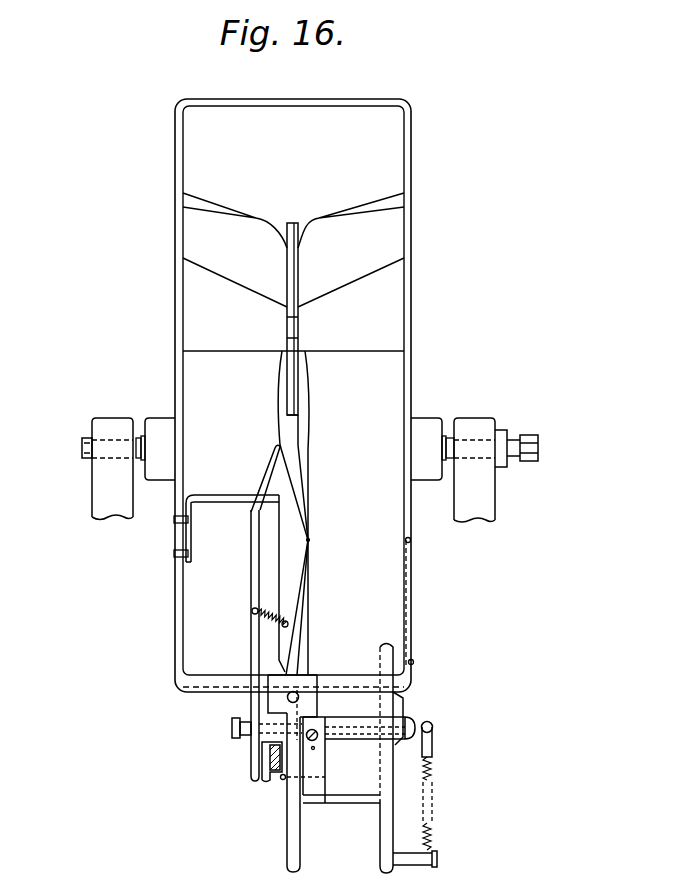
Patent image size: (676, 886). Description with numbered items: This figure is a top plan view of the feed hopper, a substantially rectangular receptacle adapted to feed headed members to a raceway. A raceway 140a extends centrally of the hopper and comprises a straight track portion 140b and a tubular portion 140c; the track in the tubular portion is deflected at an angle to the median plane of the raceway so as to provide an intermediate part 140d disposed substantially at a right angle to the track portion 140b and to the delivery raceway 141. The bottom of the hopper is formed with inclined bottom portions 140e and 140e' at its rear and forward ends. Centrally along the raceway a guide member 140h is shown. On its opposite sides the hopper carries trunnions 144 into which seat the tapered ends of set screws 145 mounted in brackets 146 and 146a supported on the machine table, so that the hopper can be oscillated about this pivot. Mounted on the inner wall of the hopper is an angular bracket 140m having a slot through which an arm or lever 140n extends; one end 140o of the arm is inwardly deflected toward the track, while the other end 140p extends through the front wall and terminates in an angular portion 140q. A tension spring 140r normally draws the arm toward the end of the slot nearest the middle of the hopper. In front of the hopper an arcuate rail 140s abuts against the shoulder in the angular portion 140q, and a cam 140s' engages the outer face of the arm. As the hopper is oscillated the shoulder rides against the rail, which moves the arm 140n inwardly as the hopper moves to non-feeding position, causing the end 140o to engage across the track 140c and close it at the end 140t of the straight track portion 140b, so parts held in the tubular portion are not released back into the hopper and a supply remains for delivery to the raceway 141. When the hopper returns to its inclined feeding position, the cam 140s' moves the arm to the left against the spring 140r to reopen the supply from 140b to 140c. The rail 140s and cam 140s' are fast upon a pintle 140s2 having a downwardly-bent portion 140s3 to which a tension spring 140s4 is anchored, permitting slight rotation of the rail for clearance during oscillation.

The inclined bottom portion 140e is at (294, 395).
The inclined bottom portion 140e' is at (293, 407).
The guide rod 140h is at (293, 287).
The straight track portion 140b is at (299, 328).
The end of straight track portion 140t is at (298, 417).
The raceway 140a is at (295, 533).
The tubular portion 140c is at (297, 455).
The intermediate part 140d is at (308, 540).
The inwardly deflected end of arm 140o is at (276, 447).
The angular bracket 140m is at (229, 503).
The arm or lever 140n is at (251, 578).
The tension spring 140r is at (263, 623).
The end of arm 140p is at (262, 700).
The cam 140s' is at (203, 750).
The angular portion 140q is at (266, 752).
The arcuate rail 140s is at (268, 777).
The raceway 141 is at (297, 838).
The pintle 140s2 is at (418, 720).
The downwardly-bent portion 140s3 is at (433, 743).
The tension spring 140s4 is at (432, 767).
The trunnions 144 is at (158, 420).
The set screws 145 is at (138, 437).
The bracket 146 is at (102, 495).
The bracket 146a is at (493, 508).